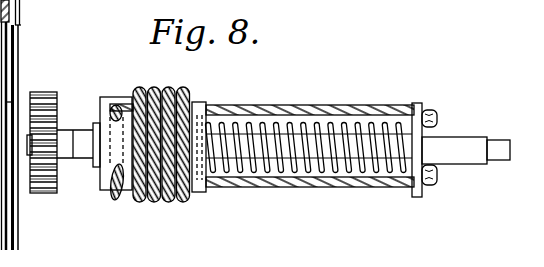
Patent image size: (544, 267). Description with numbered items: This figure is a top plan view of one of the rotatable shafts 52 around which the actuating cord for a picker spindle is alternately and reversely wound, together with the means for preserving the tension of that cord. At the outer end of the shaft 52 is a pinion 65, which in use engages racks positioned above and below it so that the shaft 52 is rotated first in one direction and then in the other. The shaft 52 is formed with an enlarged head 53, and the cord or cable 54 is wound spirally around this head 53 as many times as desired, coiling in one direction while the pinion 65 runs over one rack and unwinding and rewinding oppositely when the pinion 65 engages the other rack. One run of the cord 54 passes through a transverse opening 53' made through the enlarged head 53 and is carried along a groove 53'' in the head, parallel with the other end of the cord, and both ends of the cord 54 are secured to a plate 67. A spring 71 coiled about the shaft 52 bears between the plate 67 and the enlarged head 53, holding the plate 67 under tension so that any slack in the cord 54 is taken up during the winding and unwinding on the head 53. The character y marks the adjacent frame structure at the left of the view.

The frame post y is at (14, 102).
The pinion 65 is at (41, 99).
The shaft 52 is at (78, 159).
The opening 53' is at (168, 135).
The enlarged head 53 is at (124, 130).
The cord or cable 54 is at (180, 201).
The groove 53'' is at (305, 127).
The spring 71 is at (312, 172).
The plate 67 is at (417, 192).